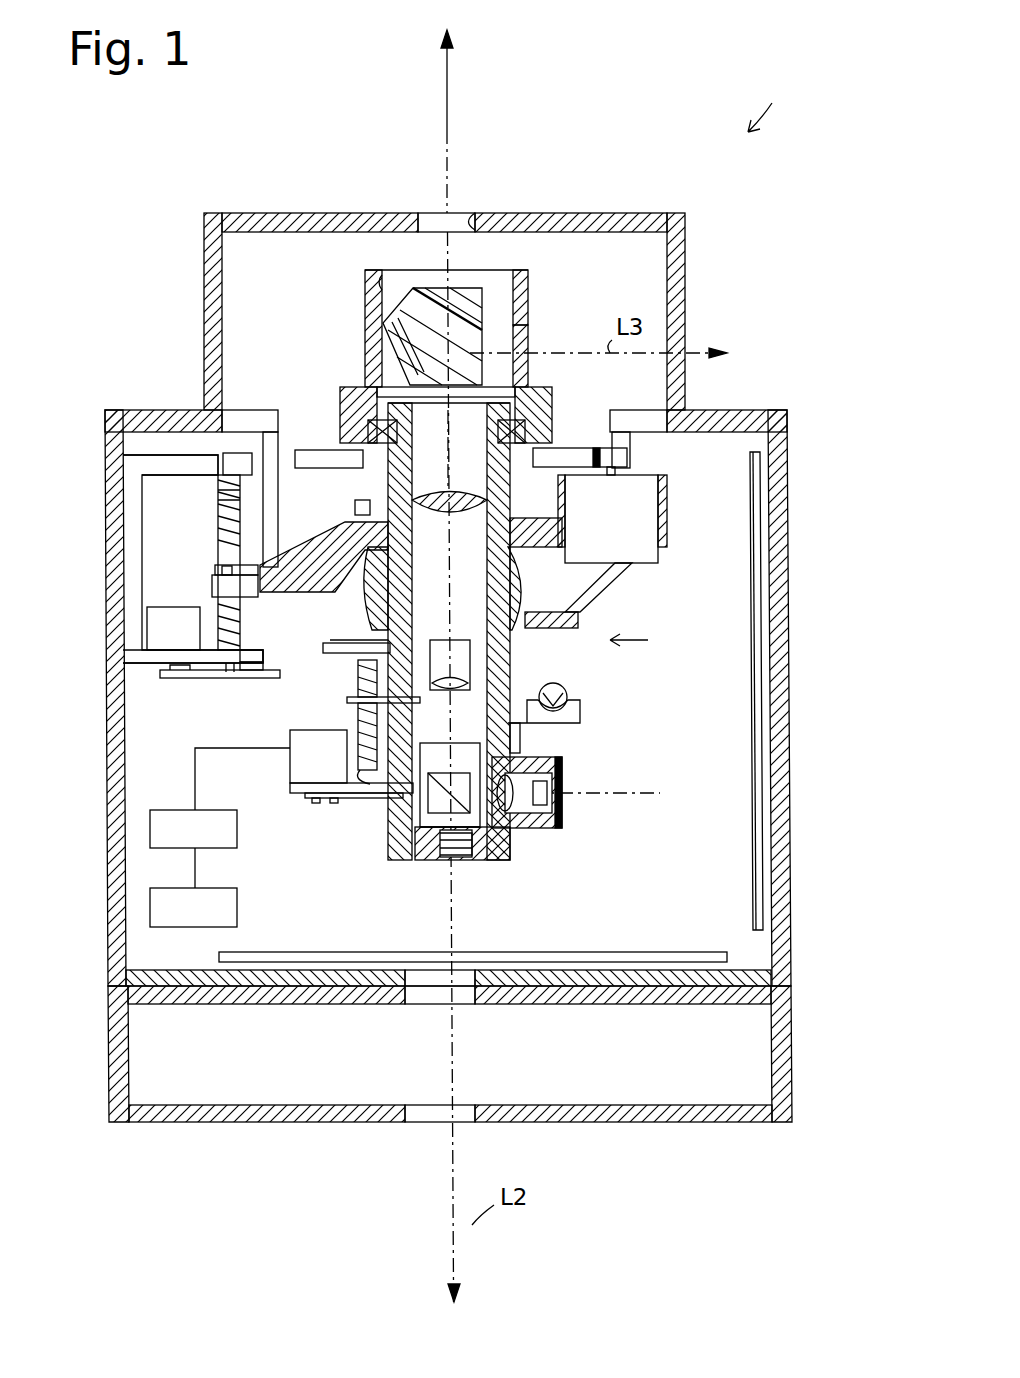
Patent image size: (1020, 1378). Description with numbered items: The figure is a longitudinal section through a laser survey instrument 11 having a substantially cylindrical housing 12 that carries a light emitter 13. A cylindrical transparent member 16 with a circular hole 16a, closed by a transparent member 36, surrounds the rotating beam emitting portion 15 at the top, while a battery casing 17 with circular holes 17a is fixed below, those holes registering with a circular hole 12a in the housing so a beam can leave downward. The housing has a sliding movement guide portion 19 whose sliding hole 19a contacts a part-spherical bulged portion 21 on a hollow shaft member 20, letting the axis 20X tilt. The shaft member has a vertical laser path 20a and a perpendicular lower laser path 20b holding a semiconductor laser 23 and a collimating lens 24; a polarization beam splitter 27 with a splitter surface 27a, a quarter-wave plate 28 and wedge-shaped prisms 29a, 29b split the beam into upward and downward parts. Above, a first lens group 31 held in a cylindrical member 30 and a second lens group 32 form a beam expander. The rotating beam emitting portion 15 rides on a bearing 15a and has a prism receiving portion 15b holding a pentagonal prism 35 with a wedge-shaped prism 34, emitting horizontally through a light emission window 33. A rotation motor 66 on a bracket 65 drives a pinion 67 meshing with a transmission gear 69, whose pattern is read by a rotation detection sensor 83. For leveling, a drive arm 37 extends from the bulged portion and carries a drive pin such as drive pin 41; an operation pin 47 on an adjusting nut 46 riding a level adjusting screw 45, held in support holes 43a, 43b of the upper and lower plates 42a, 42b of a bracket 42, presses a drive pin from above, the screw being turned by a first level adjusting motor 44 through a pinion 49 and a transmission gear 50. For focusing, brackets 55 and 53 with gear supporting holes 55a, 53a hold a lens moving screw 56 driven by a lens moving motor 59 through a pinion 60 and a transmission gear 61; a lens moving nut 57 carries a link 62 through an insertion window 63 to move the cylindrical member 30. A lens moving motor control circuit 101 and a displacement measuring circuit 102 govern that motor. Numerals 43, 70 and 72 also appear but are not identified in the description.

The laser survey instrument 11 is at (783, 101).
The housing 12 is at (787, 442).
The circular hole 12a is at (428, 970).
The light emitter 13 is at (644, 635).
The rotating beam emitting portion 15 is at (528, 285).
The bearing 15a is at (530, 400).
The prism receiving portion 15b is at (378, 292).
The cylindrical transparent member 16 is at (676, 262).
The circular hole 16a is at (470, 212).
The battery casing 17 is at (787, 1022).
The circular holes 17a is at (425, 1004).
The sliding movement guide portion 19 is at (272, 430).
The sliding hole 19a is at (515, 628).
The hollow shaft member 20 is at (392, 500).
The axis 20X is at (447, 115).
The axial hole (laser path) 20a is at (448, 470).
The laser path 20b is at (515, 765).
The bulged portion 21 is at (530, 575).
The semiconductor laser 23 is at (563, 790).
The collimating lens 24 is at (540, 828).
The polarization beam splitter 27 is at (428, 790).
The polarization splitter surface 27a is at (420, 815).
The quarter-wave plate 28 is at (445, 775).
The wedge-shaped prism 29a is at (445, 858).
The wedge-shaped prism 29b is at (462, 860).
The cylindrical member 30 is at (455, 672).
The first lens group 31 is at (442, 650).
The second lens group 32 is at (440, 515).
The light emission window 33 is at (528, 345).
The wedge-shaped prism 34 is at (462, 288).
The pentagonal prism 35 is at (402, 332).
The transparent member 36 is at (432, 213).
The drive arm 37 is at (268, 592).
The drive pin 41 is at (212, 580).
The bracket 42 is at (123, 528).
The upper plate 42a is at (160, 470).
The lower plate 42b is at (153, 657).
The lead screw 43 is at (229, 573).
The support hole 43a is at (226, 462).
The support hole 43b is at (247, 663).
The first level adjusting motor 44 is at (172, 628).
The level adjusting screw 45 is at (218, 496).
The adjusting nut 46 is at (218, 565).
The operation pin 47 is at (232, 568).
The pinion 49 is at (178, 678).
The transmission gear 50 is at (255, 678).
The lower bracket 53 is at (292, 786).
The gear supporting hole 53a is at (355, 798).
The upper bracket 55 is at (323, 648).
The gear supporting hole 55a is at (340, 640).
The lens moving screw 56 is at (358, 725).
The lens moving nut 57 is at (358, 680).
The lens moving motor 59 is at (290, 740).
The pinion 60 is at (315, 803).
The transmission gear 61 is at (333, 803).
The link 62 is at (347, 700).
The insertion window 63 is at (380, 796).
The bracket 65 is at (524, 532).
The rotation motor 66 is at (638, 550).
The pinion 67 is at (630, 460).
The transmission gear 69 is at (594, 452).
The bracket 70 is at (580, 712).
The screw 72 is at (563, 688).
The rotation detection sensor 83 is at (355, 505).
The lens moving motor control circuit 101 is at (185, 812).
The drive amount measuring circuit 102 is at (172, 925).